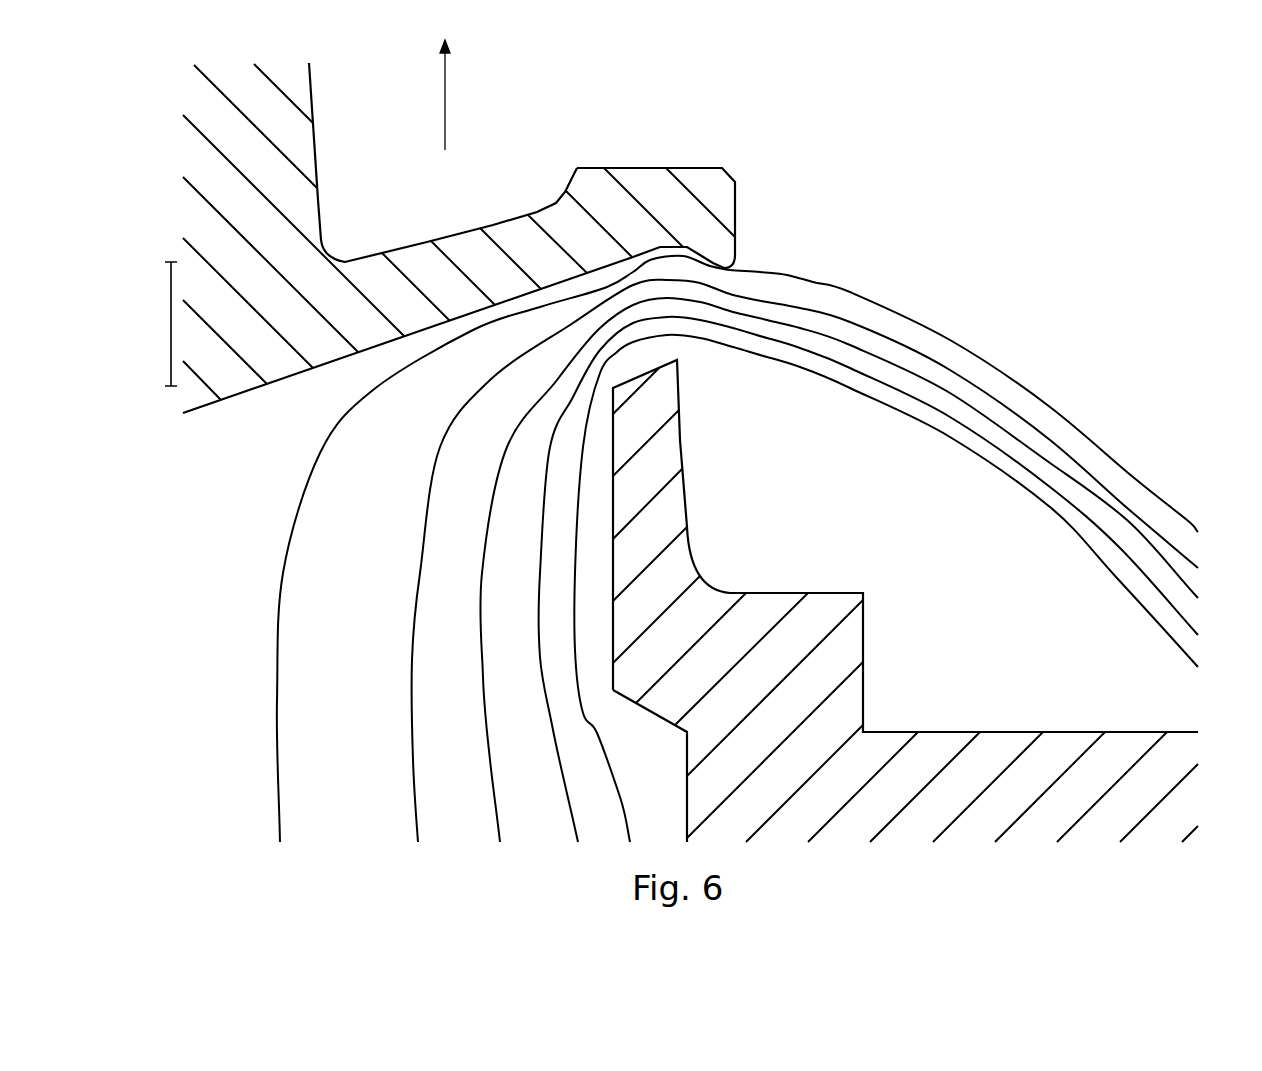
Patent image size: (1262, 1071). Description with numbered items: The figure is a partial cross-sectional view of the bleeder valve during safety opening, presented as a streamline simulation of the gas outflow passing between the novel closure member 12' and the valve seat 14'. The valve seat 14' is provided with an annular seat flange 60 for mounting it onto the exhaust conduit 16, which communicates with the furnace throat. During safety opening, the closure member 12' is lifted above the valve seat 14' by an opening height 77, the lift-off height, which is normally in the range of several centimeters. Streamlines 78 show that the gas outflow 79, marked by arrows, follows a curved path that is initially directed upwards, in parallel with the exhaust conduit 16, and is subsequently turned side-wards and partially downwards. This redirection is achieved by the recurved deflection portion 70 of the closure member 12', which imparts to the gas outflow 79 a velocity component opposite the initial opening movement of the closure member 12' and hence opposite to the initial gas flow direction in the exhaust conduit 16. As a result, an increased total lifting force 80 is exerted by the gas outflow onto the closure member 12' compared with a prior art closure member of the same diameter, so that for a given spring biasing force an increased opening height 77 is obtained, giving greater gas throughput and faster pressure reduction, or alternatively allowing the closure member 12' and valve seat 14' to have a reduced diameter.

The closure member 12' is at (408, 238).
The valve seat 14' is at (688, 525).
The exhaust conduit 16 is at (224, 795).
The annular seat flange 60 is at (779, 793).
The recurved deflection portion 70 is at (712, 244).
The opening height 77 is at (171, 320).
The streamlines 78 is at (1118, 498).
The gas outflow 79 is at (527, 325).
The total lifting force 80 is at (445, 100).